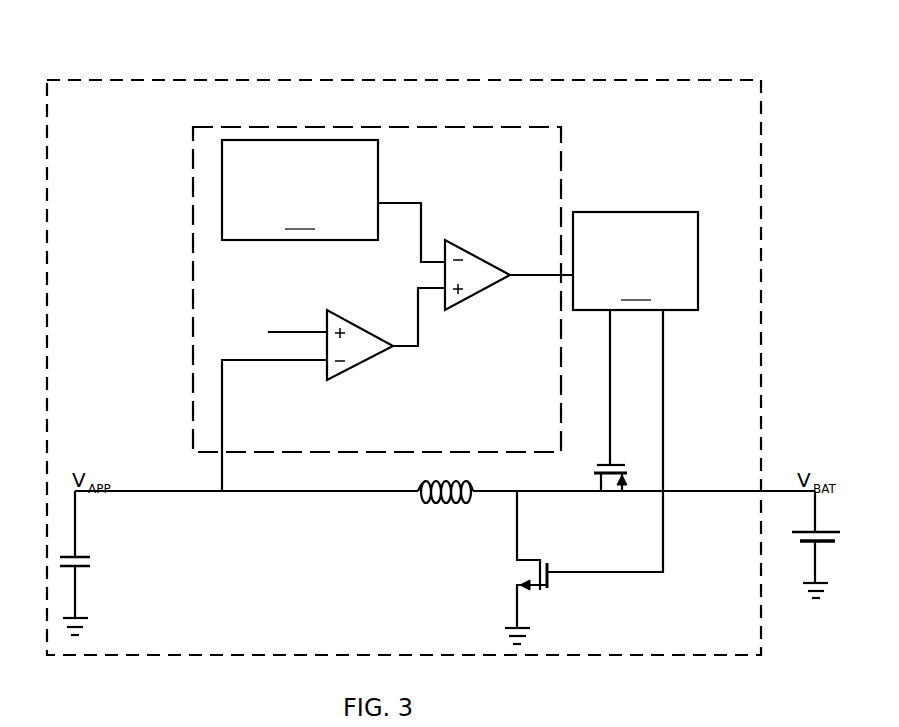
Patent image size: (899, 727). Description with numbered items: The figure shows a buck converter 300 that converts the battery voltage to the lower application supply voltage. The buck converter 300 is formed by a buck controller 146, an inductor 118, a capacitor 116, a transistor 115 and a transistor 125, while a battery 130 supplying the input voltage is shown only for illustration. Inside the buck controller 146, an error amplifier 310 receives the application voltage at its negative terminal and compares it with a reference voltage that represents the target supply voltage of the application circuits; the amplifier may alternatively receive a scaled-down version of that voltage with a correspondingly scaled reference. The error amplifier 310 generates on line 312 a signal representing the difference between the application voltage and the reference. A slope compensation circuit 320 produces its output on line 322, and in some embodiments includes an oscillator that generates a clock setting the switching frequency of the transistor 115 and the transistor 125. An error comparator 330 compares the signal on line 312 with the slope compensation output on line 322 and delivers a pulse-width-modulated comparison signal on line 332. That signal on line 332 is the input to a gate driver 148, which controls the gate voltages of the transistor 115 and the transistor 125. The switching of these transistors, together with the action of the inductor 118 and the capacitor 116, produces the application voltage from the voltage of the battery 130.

The buck converter 300 is at (733, 80).
The buck controller 146 is at (562, 142).
The slope compensation circuit 320 is at (300, 190).
The line 322 is at (396, 203).
The error comparator 330 is at (477, 309).
The line 332 is at (547, 274).
The line 312 is at (417, 340).
The error amplifier 310 is at (305, 400).
The gate driver circuit 148 is at (635, 261).
The capacitor 116 is at (95, 563).
The inductor 118 is at (445, 479).
The transistor 115 is at (566, 477).
The transistor 125 is at (611, 422).
The battery 130 is at (827, 544).